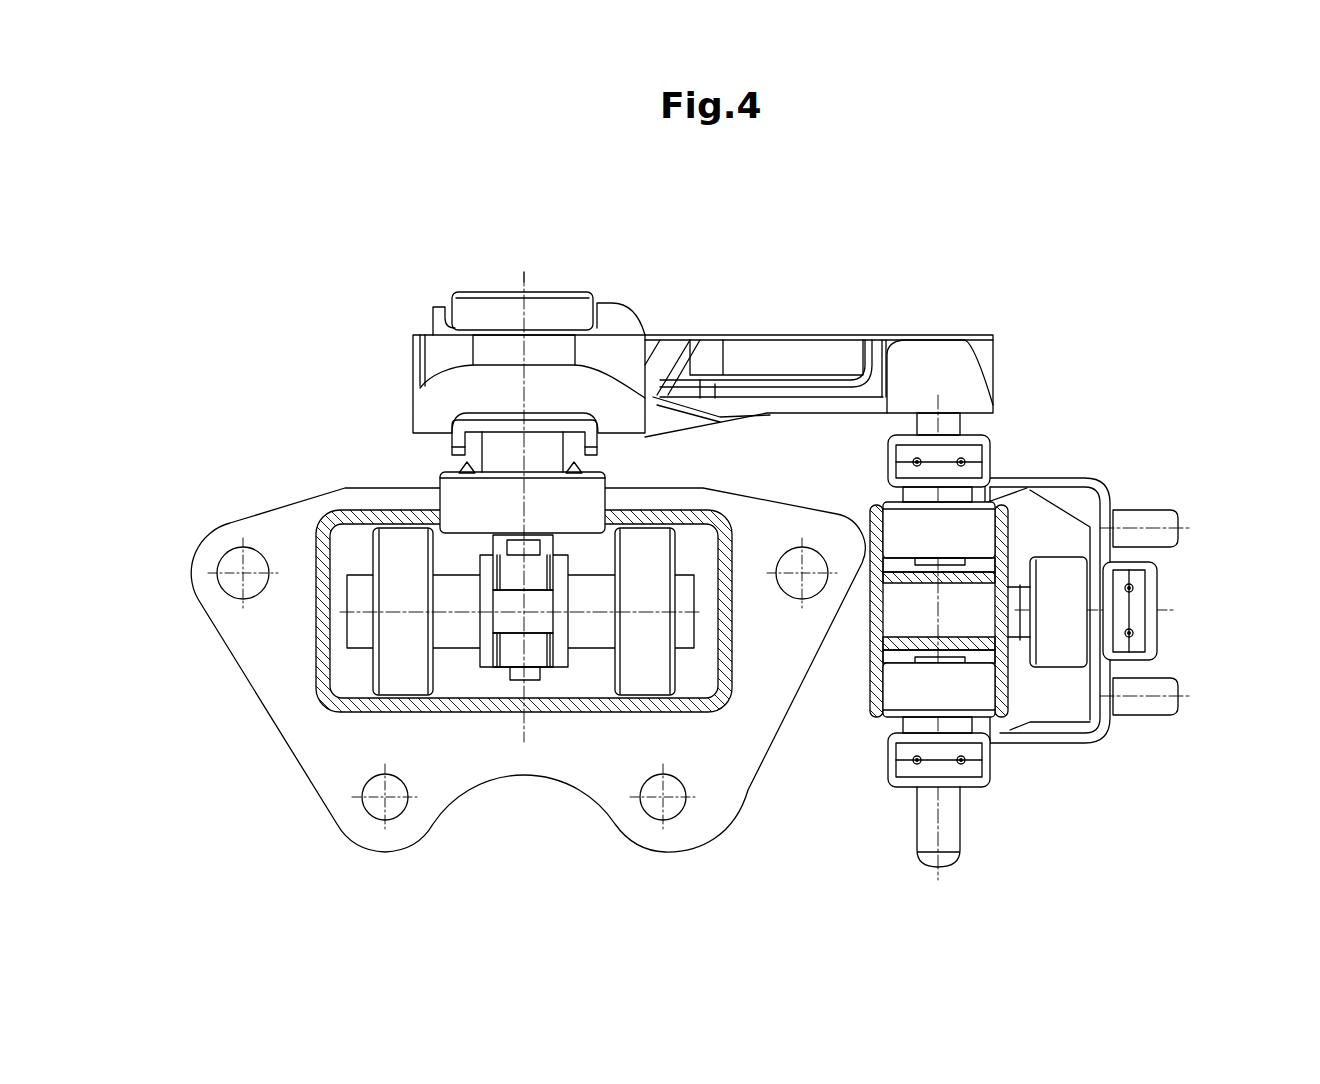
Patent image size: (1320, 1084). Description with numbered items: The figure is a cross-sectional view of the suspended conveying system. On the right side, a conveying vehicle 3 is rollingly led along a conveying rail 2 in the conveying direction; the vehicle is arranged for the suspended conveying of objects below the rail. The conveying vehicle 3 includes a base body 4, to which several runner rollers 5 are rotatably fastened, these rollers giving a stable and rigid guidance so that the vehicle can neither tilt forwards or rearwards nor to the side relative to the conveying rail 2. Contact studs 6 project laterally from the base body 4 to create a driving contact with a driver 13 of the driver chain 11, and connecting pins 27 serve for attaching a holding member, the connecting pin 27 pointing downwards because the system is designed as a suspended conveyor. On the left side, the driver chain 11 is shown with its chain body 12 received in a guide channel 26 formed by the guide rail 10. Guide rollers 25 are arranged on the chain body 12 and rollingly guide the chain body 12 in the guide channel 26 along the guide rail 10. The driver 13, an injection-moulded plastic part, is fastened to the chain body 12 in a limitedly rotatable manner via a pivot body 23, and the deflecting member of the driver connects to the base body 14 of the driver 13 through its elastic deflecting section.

The conveying rail 2 is at (1097, 485).
The conveying vehicle 3 is at (1067, 745).
The base body 4 is at (1097, 729).
The runner roller 5 is at (978, 516).
The contact stud 6 is at (951, 427).
The guide rail 10 is at (327, 693).
The driver chain 11 is at (347, 633).
The chain body 12 is at (560, 651).
The driver 13 is at (817, 333).
The base body of the driver 14 is at (672, 338).
The pivot body 23 is at (497, 346).
The guide roller 25 is at (458, 491).
The guide channel 26 is at (458, 677).
The connecting pin 27 is at (1150, 688).